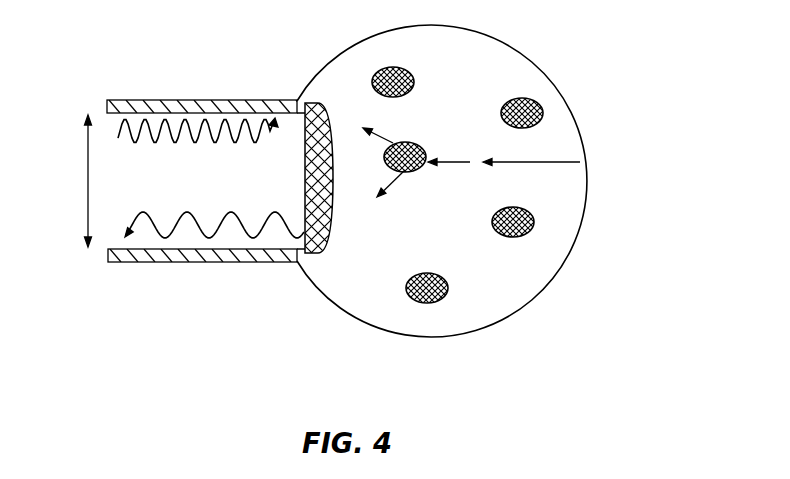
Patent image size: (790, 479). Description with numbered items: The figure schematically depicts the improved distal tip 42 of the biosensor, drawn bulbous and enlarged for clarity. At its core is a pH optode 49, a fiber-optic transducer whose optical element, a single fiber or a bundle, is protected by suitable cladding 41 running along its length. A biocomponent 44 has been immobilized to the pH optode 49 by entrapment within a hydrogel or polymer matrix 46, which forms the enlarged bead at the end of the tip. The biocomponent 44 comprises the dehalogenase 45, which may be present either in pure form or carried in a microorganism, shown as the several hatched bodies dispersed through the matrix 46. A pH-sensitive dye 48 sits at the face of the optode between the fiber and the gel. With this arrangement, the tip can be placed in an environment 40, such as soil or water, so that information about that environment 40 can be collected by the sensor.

The environment 40 is at (622, 46).
The cladding 41 is at (115, 100).
The distal tip 42 is at (270, 308).
The biocomponent 44 is at (574, 241).
The dehalogenase 45 is at (429, 307).
The hydrogel or polymer matrix 46 is at (427, 227).
The pH sensitive dye 48 is at (303, 102).
The pH optode 49 is at (148, 188).